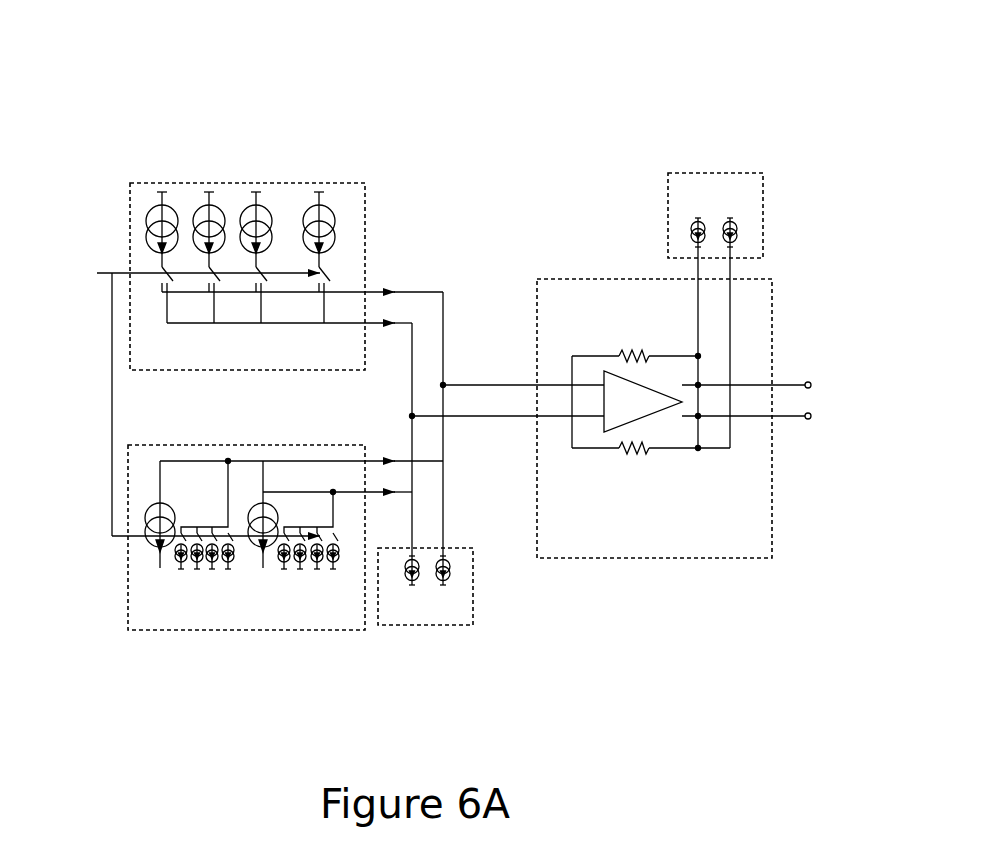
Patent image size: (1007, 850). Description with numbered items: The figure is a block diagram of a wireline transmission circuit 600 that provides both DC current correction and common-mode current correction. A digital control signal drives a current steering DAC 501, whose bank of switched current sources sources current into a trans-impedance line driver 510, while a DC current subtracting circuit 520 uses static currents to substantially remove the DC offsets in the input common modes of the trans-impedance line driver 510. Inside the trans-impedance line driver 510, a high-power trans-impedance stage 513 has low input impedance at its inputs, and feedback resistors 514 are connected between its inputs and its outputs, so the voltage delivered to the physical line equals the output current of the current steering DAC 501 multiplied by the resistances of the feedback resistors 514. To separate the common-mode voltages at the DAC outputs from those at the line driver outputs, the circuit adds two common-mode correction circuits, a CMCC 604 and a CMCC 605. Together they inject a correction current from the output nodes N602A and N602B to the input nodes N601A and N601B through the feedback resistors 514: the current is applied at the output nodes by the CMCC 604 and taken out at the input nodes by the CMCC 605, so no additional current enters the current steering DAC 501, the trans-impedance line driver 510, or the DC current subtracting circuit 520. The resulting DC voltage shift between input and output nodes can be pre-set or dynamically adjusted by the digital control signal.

The wireline transmission circuit 600 is at (723, 88).
The current steering DAC 501 is at (292, 183).
The DC current subtracting circuit 520 is at (192, 445).
The trans-impedance line driver 510 is at (558, 278).
The trans-impedance stage 513 is at (615, 411).
The feedback resistors 514 is at (641, 348).
The common-mode correction circuit 604 is at (667, 213).
The common-mode correction circuit 605 is at (475, 593).
The input node N601A is at (570, 383).
The input node N601B is at (570, 419).
The output node N602A is at (752, 383).
The output node N602B is at (747, 418).